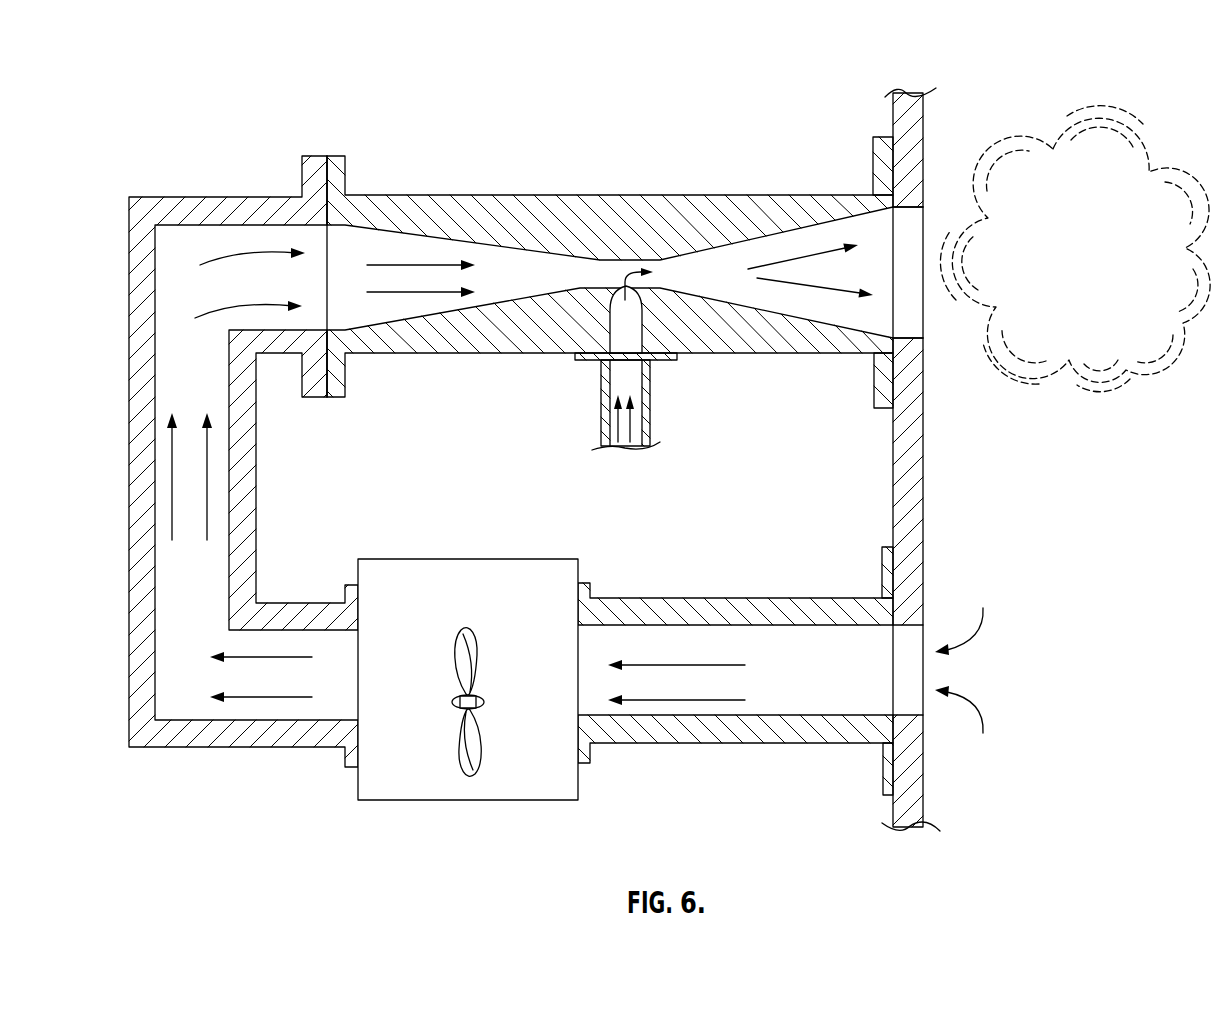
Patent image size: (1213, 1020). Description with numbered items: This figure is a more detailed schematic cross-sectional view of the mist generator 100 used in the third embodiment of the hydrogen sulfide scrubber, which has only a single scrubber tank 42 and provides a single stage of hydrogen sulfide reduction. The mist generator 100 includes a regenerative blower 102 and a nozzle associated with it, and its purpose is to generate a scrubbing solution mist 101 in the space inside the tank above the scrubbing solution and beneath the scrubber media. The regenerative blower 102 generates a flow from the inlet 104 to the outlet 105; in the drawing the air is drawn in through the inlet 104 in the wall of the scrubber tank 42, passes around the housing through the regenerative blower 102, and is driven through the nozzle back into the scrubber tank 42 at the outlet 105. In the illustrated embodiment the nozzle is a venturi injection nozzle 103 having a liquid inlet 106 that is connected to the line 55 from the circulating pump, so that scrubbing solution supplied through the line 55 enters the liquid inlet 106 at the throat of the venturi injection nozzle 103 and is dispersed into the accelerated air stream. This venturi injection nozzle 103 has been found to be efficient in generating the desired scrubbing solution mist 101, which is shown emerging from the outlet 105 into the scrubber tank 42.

The mist generator 100 is at (239, 165).
The scrubbing solution mist 101 is at (1066, 134).
The regenerative blower 102 is at (383, 803).
The venturi injection nozzle 103 is at (620, 195).
The inlet 104 is at (895, 677).
The outlet 105 is at (900, 257).
The liquid inlet 106 is at (630, 356).
The line 55 is at (650, 410).
The scrubber tank 42 is at (887, 113).